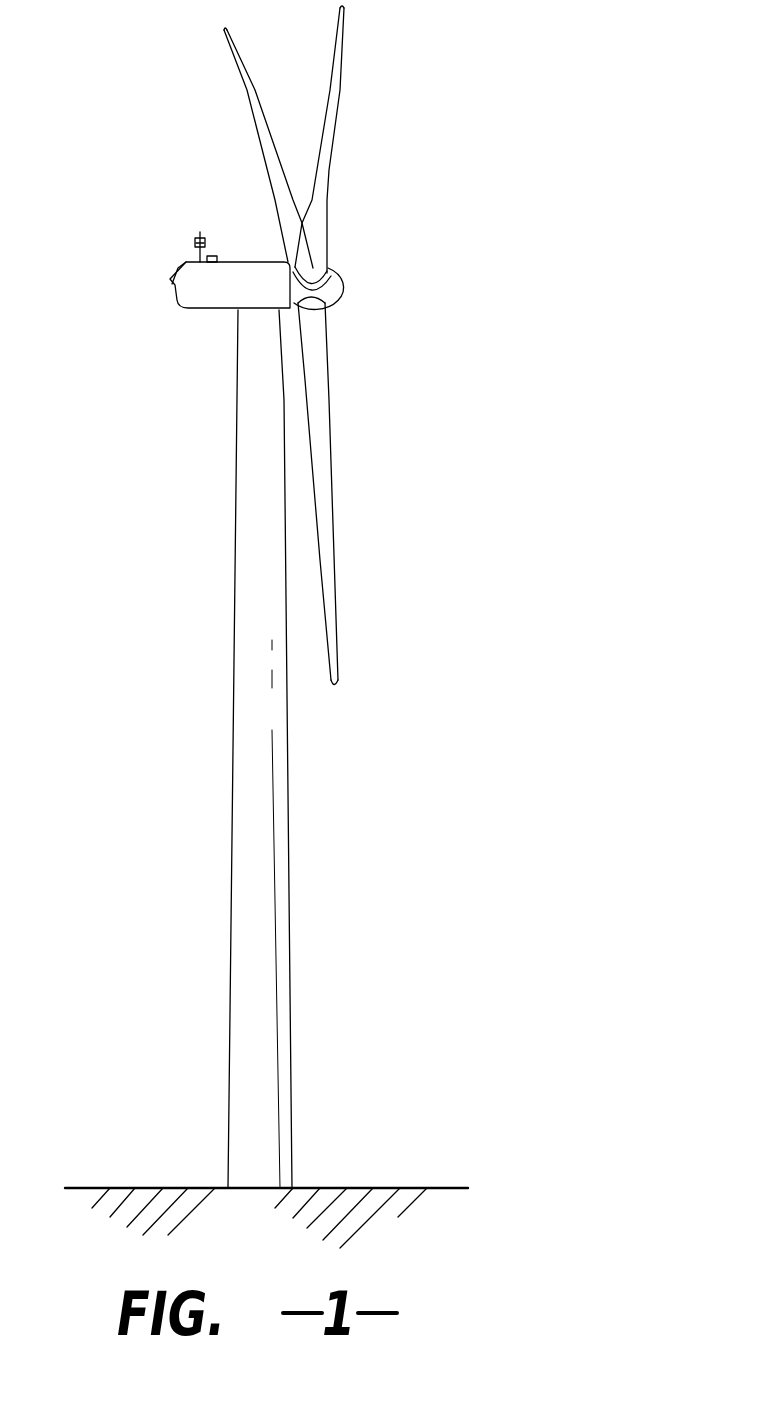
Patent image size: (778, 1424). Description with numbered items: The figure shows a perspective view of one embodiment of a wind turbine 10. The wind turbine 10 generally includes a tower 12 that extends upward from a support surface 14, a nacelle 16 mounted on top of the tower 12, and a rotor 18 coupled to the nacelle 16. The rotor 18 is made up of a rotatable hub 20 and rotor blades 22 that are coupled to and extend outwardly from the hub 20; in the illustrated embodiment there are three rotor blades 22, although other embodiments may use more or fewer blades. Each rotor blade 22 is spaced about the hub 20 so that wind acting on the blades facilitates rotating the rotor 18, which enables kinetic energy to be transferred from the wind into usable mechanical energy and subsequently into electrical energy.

The wind turbine 10 is at (460, 114).
The tower 12 is at (243, 868).
The support surface 14 is at (362, 1185).
The nacelle 16 is at (212, 310).
The rotor 18 is at (368, 298).
The rotatable hub 20 is at (340, 287).
The rotor blade 22 is at (247, 113).